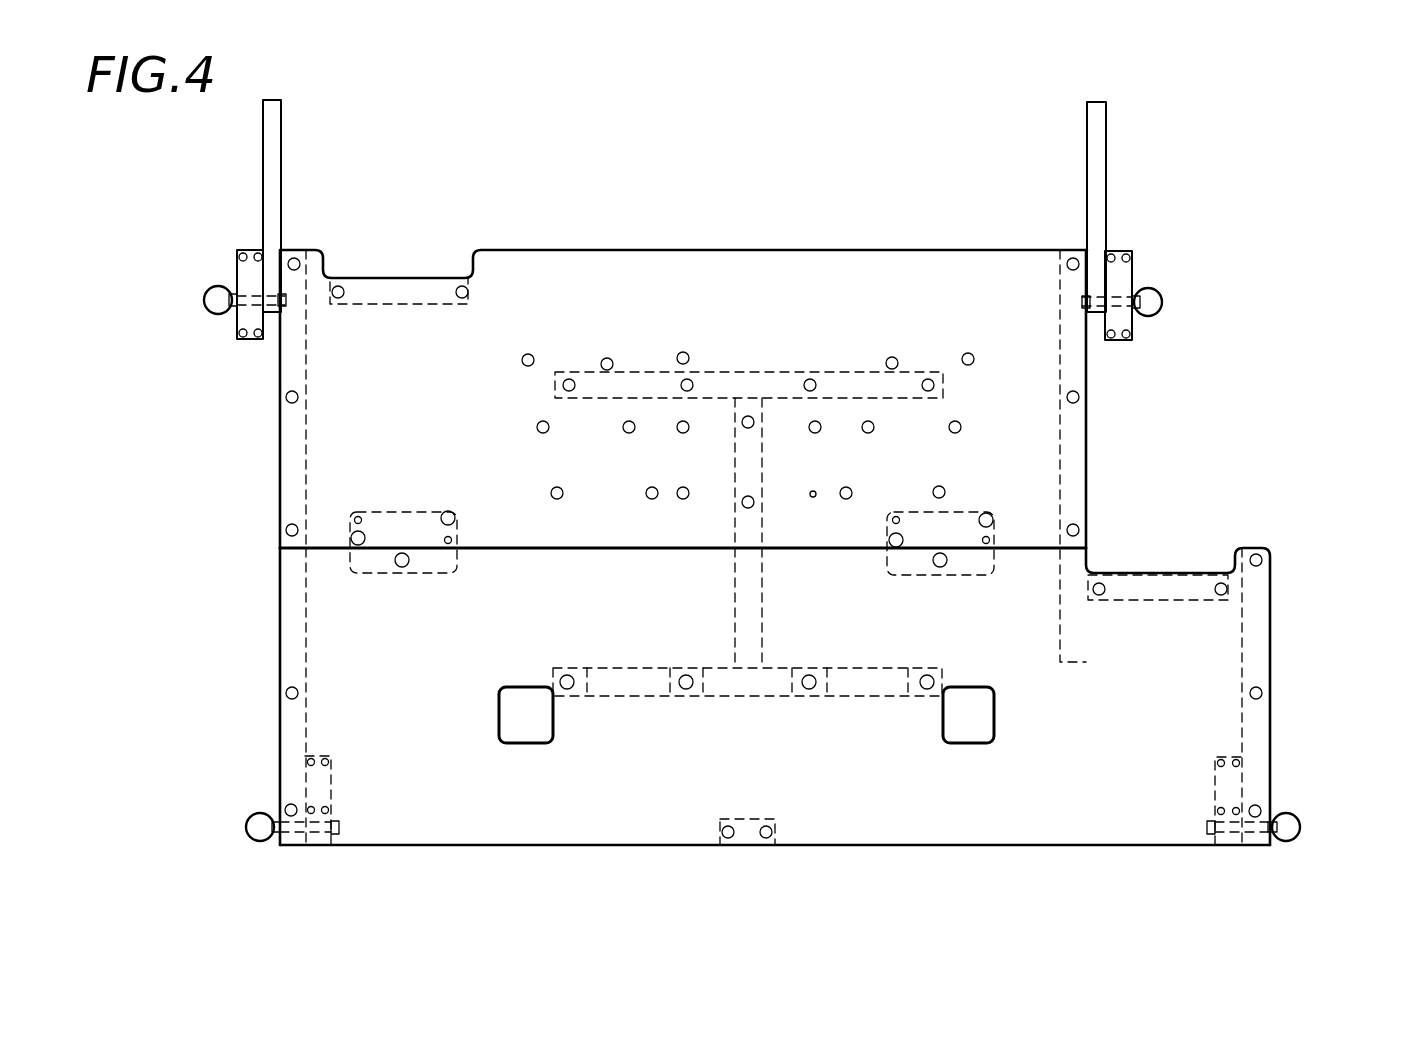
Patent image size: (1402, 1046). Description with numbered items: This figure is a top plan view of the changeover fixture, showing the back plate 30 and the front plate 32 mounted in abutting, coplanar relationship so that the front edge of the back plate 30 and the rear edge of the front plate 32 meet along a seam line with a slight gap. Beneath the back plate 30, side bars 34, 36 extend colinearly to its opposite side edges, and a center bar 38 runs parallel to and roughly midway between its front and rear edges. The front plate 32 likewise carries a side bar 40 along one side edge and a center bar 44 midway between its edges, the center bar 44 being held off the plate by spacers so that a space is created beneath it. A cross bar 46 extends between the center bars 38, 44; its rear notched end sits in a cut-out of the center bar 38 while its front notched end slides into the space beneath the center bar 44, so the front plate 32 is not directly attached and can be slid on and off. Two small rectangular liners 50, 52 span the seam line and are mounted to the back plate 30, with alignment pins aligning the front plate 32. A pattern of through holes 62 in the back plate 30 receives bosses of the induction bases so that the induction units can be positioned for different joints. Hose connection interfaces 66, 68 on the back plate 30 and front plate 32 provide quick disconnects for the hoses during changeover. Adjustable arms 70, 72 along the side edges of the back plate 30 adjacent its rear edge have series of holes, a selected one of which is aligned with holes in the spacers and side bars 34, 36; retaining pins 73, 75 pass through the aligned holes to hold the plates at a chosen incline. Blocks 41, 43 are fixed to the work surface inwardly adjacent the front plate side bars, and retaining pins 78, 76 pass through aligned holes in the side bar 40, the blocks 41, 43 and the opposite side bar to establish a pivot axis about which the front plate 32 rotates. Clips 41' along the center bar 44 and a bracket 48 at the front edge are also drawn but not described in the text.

The back plate 30 is at (722, 266).
The front plate 32 is at (571, 822).
The side bar 34 is at (295, 450).
The side bar 36 is at (1090, 452).
The center bar 38 is at (750, 385).
The side bar 40 is at (292, 603).
The block 41 is at (370, 800).
The lower mounting clips 41' is at (747, 728).
The block 43 is at (1212, 788).
The center bar 44 is at (749, 700).
The cross bar 46 is at (752, 612).
The bottom mounting bracket 48 is at (745, 848).
The liner 50 is at (398, 510).
The liner 52 is at (963, 520).
The through holes 62 is at (681, 352).
The hose connection interface 66 is at (1158, 588).
The hose connection interface 68 is at (403, 292).
The adjustable arm 70 is at (1108, 148).
The adjustable arm 72 is at (278, 165).
The retaining pin 73 is at (1150, 302).
The retaining pin 75 is at (218, 300).
The retaining pin 76 is at (1290, 827).
The retaining pin 78 is at (255, 828).